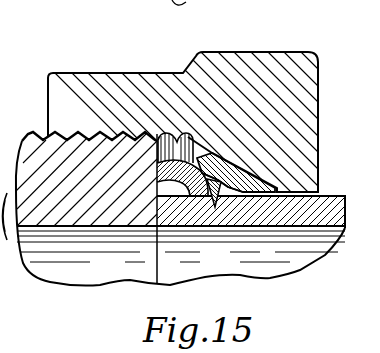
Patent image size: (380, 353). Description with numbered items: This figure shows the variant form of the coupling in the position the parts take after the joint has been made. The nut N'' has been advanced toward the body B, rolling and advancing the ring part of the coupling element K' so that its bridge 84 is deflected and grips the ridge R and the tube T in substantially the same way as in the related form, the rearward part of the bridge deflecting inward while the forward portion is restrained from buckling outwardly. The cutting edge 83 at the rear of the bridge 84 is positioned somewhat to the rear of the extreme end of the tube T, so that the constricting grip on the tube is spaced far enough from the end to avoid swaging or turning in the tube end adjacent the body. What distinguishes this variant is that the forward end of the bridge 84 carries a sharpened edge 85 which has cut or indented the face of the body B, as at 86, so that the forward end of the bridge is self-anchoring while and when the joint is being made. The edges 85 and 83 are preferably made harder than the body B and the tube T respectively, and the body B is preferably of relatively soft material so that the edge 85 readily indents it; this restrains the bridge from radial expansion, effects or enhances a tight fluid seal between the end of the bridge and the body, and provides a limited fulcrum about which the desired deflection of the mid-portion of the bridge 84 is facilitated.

The indentation in the face of the body 86 is at (148, 157).
The sharpened edge 85 is at (177, 142).
The coupling element K' is at (240, 107).
The nut N'' is at (202, 122).
The body B is at (88, 202).
The bridge 84 is at (187, 178).
The ridge R is at (209, 207).
The cutting edge 83 is at (217, 188).
The tube T is at (251, 256).